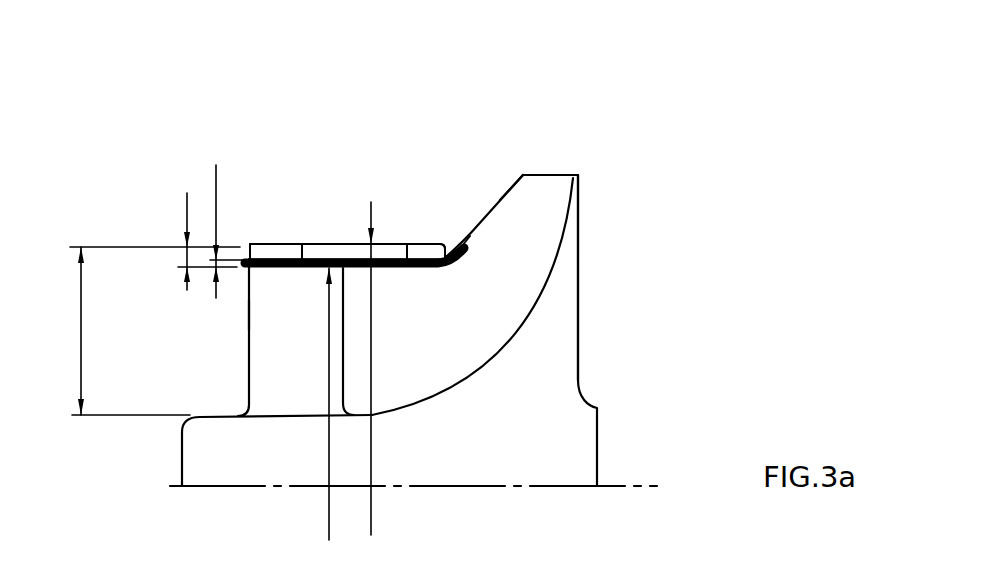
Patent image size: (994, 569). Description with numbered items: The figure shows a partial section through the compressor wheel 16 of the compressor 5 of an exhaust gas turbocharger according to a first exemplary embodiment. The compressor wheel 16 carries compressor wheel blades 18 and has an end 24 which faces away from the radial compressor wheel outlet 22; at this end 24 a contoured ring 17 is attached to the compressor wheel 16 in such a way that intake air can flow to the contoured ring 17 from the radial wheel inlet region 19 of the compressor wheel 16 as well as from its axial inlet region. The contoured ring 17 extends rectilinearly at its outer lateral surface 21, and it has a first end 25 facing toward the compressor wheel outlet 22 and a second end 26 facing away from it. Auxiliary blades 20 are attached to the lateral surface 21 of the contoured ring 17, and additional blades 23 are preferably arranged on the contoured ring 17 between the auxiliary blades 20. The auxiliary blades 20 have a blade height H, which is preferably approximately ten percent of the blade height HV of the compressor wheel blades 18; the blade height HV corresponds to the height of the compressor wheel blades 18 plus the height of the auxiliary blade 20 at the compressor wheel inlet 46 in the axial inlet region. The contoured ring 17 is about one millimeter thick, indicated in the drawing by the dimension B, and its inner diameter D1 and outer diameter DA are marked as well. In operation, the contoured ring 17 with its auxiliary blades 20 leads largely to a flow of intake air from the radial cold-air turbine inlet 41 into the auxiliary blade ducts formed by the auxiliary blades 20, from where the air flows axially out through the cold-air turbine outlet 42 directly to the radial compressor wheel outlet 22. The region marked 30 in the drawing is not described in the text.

The compressor 5 is at (707, 165).
The compressor wheel 16 is at (585, 209).
The contoured ring 17 is at (287, 271).
The compressor wheel blades 18 is at (537, 192).
The radial wheel inlet region 19 is at (300, 95).
The auxiliary blades 20 is at (283, 246).
The outer lateral surface 21 is at (408, 243).
The compressor wheel outlet 22 is at (558, 172).
The additional blades 23 is at (350, 245).
The end of the compressor wheel 24 is at (582, 298).
The first end 25 is at (456, 240).
The second end 26 is at (239, 257).
The cavity 30 is at (185, 343).
The radial cold-air turbine inlet 41 is at (328, 232).
The cold-air turbine outlet 42 is at (465, 240).
The compressor wheel inlet 46 is at (247, 369).
The blade height of the compressor wheel blades HV is at (138, 331).
The blade height of the auxiliary blades H is at (198, 240).
The thickness dimension B is at (220, 224).
The inner diameter of the contoured ring D1 is at (327, 509).
The outer diameter of the contoured ring DA is at (376, 503).